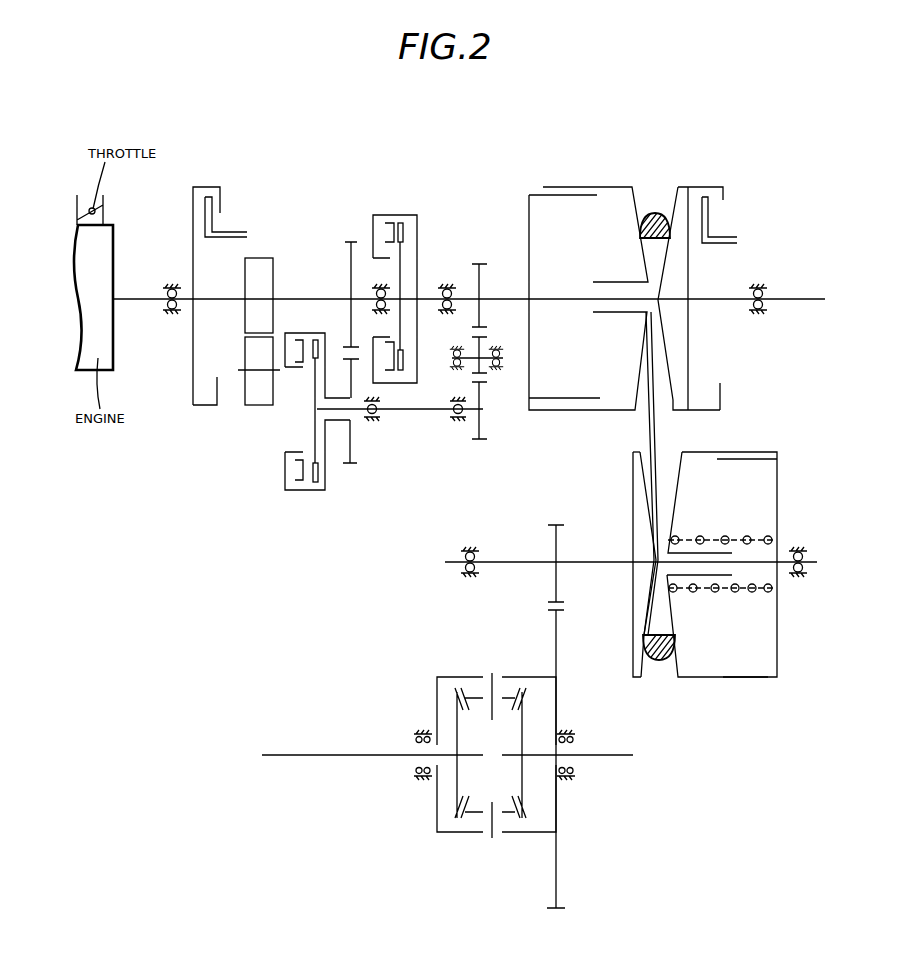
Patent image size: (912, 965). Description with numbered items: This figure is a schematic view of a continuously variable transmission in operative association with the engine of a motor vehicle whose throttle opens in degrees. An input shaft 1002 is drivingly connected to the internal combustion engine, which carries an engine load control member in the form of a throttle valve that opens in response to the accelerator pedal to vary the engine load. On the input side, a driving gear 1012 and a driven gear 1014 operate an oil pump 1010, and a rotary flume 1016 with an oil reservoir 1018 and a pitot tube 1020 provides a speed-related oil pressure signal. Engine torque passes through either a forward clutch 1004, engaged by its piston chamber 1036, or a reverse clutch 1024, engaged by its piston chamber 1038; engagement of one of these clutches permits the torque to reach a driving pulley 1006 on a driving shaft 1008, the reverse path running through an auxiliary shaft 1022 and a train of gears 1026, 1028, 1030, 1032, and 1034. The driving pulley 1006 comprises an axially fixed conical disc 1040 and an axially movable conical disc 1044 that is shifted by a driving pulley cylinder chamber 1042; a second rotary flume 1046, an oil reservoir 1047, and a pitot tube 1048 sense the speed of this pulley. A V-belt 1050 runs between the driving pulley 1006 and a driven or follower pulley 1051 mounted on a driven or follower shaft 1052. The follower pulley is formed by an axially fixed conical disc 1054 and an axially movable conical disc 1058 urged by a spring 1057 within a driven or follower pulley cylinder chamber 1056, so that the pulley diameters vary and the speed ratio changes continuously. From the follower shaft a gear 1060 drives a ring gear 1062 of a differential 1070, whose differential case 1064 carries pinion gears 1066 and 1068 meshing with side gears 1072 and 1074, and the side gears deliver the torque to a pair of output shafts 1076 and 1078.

The input shaft 1002 is at (145, 297).
The forward clutch 1004 is at (406, 213).
The driving pulley 1006 is at (651, 159).
The driving shaft 1008 is at (718, 298).
The oil pump 1010 is at (237, 318).
The driving gear 1012 is at (267, 268).
The driven gear 1014 is at (267, 398).
The rotary flume 1016 is at (193, 363).
The oil reservoir 1018 is at (208, 407).
The pitot tube 1020 is at (222, 213).
The auxiliary shaft 1022 is at (437, 410).
The reverse clutch 1024 is at (306, 494).
The gear 1026 is at (351, 272).
The gear 1028 is at (350, 447).
The gear 1030 is at (482, 283).
The gear 1032 is at (481, 347).
The gear 1034 is at (481, 430).
The piston chamber 1036 is at (373, 230).
The piston chamber 1038 is at (290, 472).
The axially fixed conical disc 1040 is at (673, 197).
The driving pulley cylinder chamber 1042 is at (565, 205).
The axially movable conical disc 1044 is at (638, 198).
The rotary flume 1046 is at (722, 188).
The oil reservoir 1047 is at (720, 397).
The pitot tube 1048 is at (708, 218).
The V-belt 1050 is at (675, 442).
The driven or follower pulley 1051 is at (657, 669).
The driven or follower shaft 1052 is at (512, 567).
The axially fixed conical disc 1054 is at (632, 638).
The driven or follower pulley cylinder chamber 1056 is at (717, 667).
The spring 1057 is at (735, 593).
The axially movable conical disc 1058 is at (673, 670).
The gear 1060 is at (557, 523).
The ring gear 1062 is at (557, 635).
The differential case 1064 is at (438, 673).
The pinion gear 1066 is at (478, 697).
The pinion gear 1068 is at (477, 817).
The differential 1070 is at (427, 691).
The side gear 1072 is at (455, 780).
The side gear 1074 is at (523, 792).
The output shaft 1076 is at (345, 757).
The output shaft 1078 is at (625, 757).